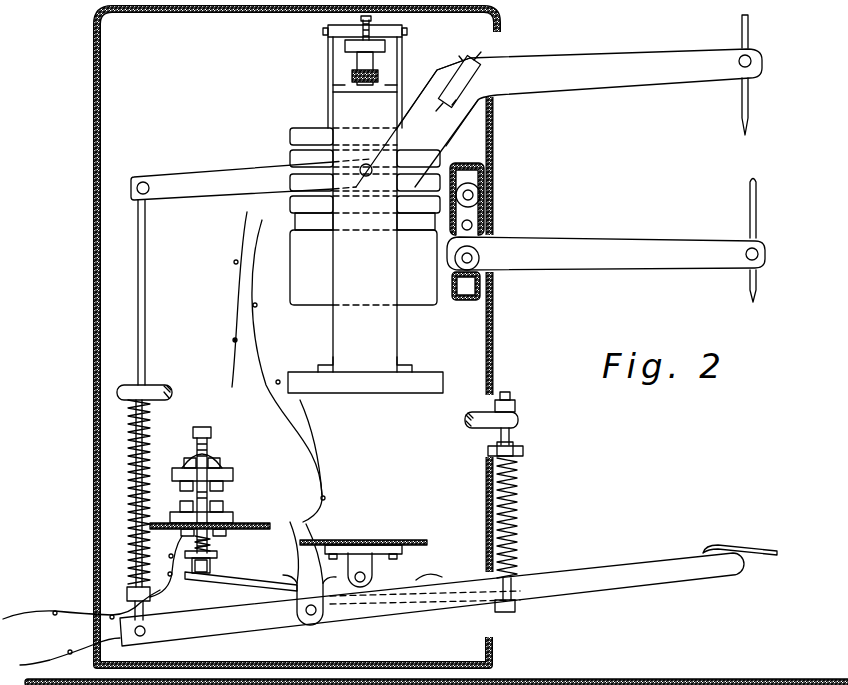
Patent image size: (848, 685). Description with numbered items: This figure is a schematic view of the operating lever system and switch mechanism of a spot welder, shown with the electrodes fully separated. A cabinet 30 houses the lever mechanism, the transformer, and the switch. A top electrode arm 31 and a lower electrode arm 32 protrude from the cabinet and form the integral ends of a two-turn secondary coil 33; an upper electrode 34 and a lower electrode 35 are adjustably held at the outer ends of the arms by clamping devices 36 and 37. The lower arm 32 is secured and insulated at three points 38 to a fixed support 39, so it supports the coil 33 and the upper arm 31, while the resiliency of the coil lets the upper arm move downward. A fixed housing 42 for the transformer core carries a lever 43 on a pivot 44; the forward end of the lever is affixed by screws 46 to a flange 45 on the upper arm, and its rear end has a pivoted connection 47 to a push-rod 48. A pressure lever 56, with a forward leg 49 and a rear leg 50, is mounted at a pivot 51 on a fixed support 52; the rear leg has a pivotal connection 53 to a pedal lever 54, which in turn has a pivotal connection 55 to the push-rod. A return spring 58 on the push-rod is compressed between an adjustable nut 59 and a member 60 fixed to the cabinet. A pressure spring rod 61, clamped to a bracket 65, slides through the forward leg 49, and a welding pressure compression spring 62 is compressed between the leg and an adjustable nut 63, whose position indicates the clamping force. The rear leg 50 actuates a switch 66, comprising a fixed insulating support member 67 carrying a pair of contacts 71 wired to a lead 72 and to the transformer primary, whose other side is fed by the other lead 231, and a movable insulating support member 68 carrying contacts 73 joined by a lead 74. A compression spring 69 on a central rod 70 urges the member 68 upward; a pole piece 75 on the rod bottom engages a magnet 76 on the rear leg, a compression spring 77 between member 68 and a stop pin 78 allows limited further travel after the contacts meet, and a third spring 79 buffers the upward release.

The cabinet 30 is at (95, 71).
The top electrode arm 31 is at (606, 57).
The lower electrode arm 32 is at (600, 269).
The secondary coil 33 is at (430, 152).
The upper electrode 34 is at (742, 104).
The lower electrode 35 is at (751, 207).
The clamping device 36 is at (751, 57).
The clamping device 37 is at (758, 254).
The points 38 is at (478, 251).
The fixed support 39 is at (470, 170).
The fixed housing 42 is at (385, 330).
The lever 43 is at (186, 177).
The pivot 44 is at (367, 177).
The flange 45 is at (475, 82).
The screws 46 is at (465, 58).
The pivoted connection 47 is at (144, 181).
The push-rod 48 is at (146, 295).
The forward leg 49 is at (425, 578).
The rear leg 50 is at (213, 573).
The pivot 51 is at (366, 576).
The fixed support 52 is at (365, 555).
The pivotal connection 53 is at (312, 616).
The pedal lever 54 is at (568, 572).
The pivotal connection 55 is at (145, 635).
The pressure lever 56 is at (292, 560).
The return spring 58 is at (140, 497).
The adjustable nut 59 is at (124, 593).
The member 60 is at (126, 388).
The pressure spring rod 61 is at (517, 414).
The welding pressure compression spring 62 is at (518, 500).
The adjustable nut 63 is at (524, 451).
The bracket 65 is at (467, 420).
The switch 66 is at (313, 485).
The insulating support member 67 is at (233, 515).
The second insulating support member 68 is at (233, 472).
The compression spring 69 is at (150, 478).
The central rod 70 is at (206, 428).
The electrical contacts 71 is at (186, 500).
The electrical lead 72 is at (258, 230).
The contacts 73 is at (195, 497).
The lead 74 is at (222, 461).
The pole piece 75 is at (218, 560).
The magnet 76 is at (262, 578).
The compression spring 77 is at (215, 460).
The stop pin 78 is at (195, 427).
The third spring 79 is at (212, 545).
The lead 231 is at (248, 215).